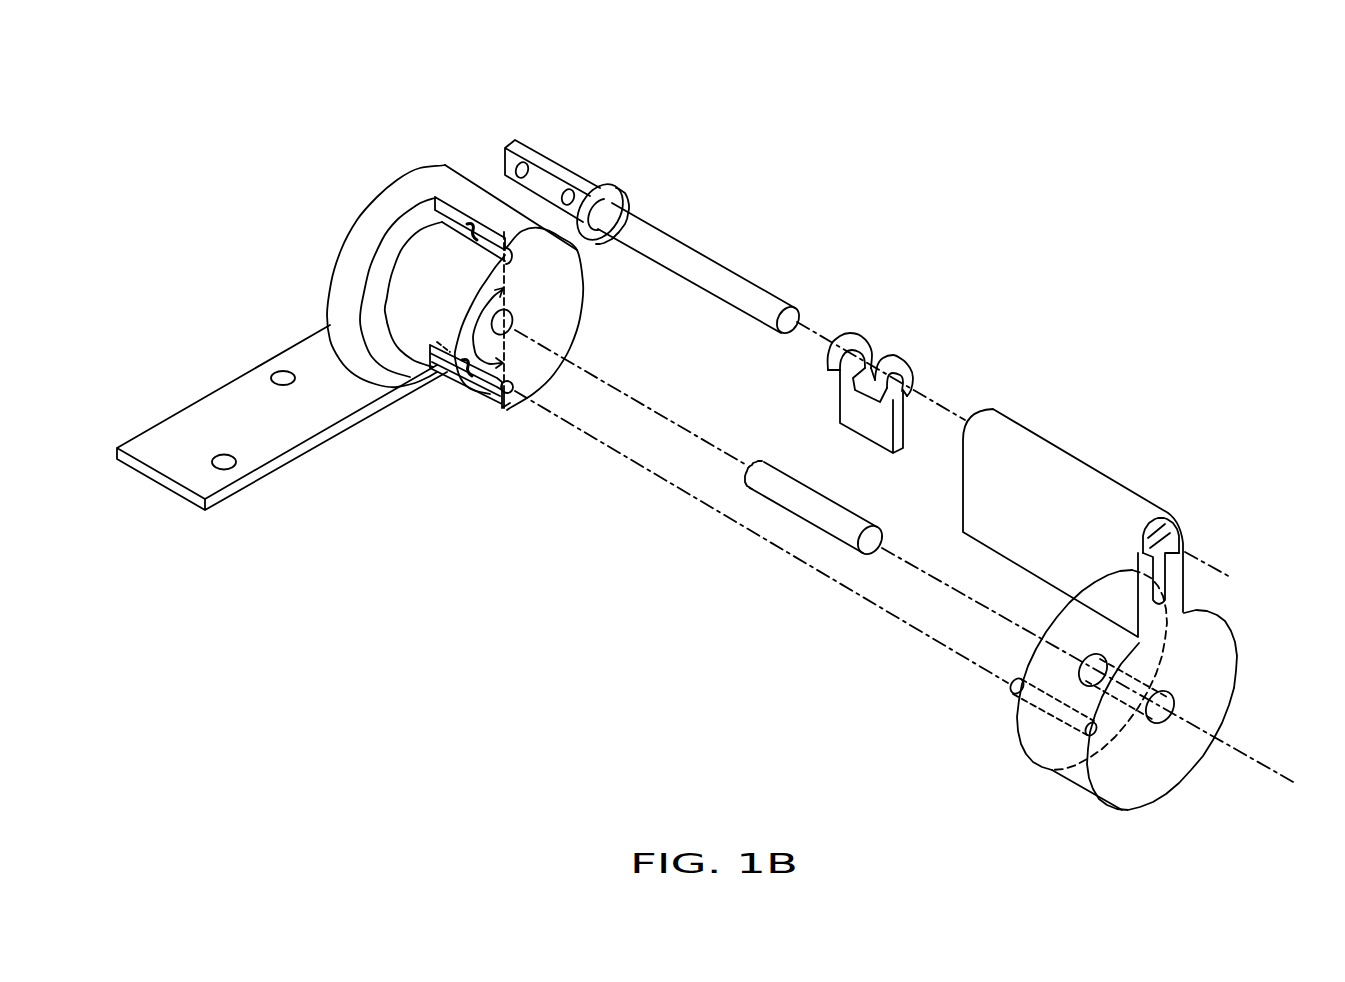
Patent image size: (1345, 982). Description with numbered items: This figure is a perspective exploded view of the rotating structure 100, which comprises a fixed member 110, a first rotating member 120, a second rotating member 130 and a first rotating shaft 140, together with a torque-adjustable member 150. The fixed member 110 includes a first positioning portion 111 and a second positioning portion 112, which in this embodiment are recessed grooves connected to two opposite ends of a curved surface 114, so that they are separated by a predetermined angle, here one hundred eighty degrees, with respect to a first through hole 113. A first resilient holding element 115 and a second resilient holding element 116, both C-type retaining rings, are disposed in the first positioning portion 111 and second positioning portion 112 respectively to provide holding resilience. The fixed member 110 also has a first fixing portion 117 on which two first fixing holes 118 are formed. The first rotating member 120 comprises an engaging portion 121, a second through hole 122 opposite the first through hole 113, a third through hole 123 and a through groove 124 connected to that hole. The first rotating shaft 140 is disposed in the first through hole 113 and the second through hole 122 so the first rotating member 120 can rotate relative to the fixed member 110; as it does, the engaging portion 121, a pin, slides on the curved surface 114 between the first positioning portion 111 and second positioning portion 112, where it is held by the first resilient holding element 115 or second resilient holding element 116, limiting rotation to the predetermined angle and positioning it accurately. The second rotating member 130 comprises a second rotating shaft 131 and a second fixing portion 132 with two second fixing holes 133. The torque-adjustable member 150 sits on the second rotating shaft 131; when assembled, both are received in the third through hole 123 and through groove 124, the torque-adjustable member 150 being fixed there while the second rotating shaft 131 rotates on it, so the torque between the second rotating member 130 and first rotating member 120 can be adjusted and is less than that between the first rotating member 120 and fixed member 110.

The rotating structure 100 is at (152, 127).
The fixed member 110 is at (373, 163).
The first positioning portion 111 is at (490, 384).
The second positioning portion 112 is at (443, 222).
The first through hole 113 is at (512, 318).
The curved surface 114 is at (410, 305).
The first resilient holding element 115 is at (460, 378).
The second resilient holding element 116 is at (465, 230).
The first fixing portion 117 is at (157, 440).
The first fixing holes 118 is at (224, 457).
The first rotating member 120 is at (1172, 798).
The engaging portion 121 is at (1013, 688).
The second through hole 122 is at (1173, 703).
The third through hole 123 is at (1160, 532).
The through groove 124 is at (1162, 597).
The second rotating member 130 is at (613, 186).
The second rotating shaft 131 is at (658, 240).
The second fixing portion 132 is at (505, 150).
The second fixing holes 133 is at (569, 190).
The first rotating shaft 140 is at (807, 497).
The torque-adjustable member 150 is at (895, 352).